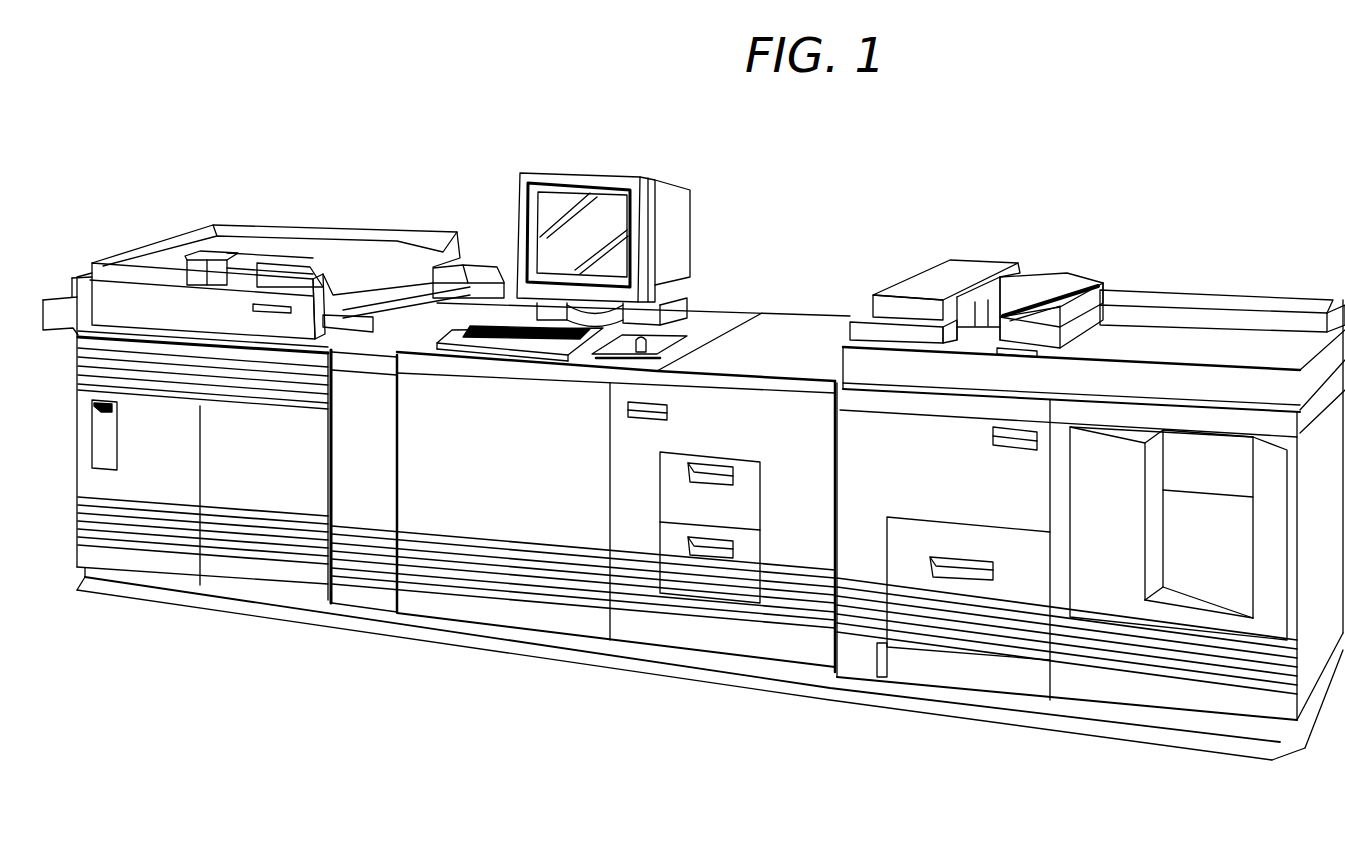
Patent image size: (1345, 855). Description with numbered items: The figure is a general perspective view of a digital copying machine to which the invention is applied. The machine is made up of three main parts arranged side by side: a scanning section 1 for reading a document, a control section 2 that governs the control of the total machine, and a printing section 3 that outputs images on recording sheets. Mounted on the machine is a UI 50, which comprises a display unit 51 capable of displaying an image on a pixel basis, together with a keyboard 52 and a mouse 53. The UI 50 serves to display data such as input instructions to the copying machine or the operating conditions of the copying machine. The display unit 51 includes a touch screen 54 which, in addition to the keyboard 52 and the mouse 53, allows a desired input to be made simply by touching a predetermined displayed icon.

The scanning section 1 is at (307, 217).
The control section 2 is at (805, 290).
The printing section 3 is at (1178, 287).
The UI 50 is at (585, 163).
The display unit 51 is at (683, 215).
The keyboard 52 is at (480, 348).
The mouse 53 is at (607, 353).
The touch screen 54 is at (543, 205).